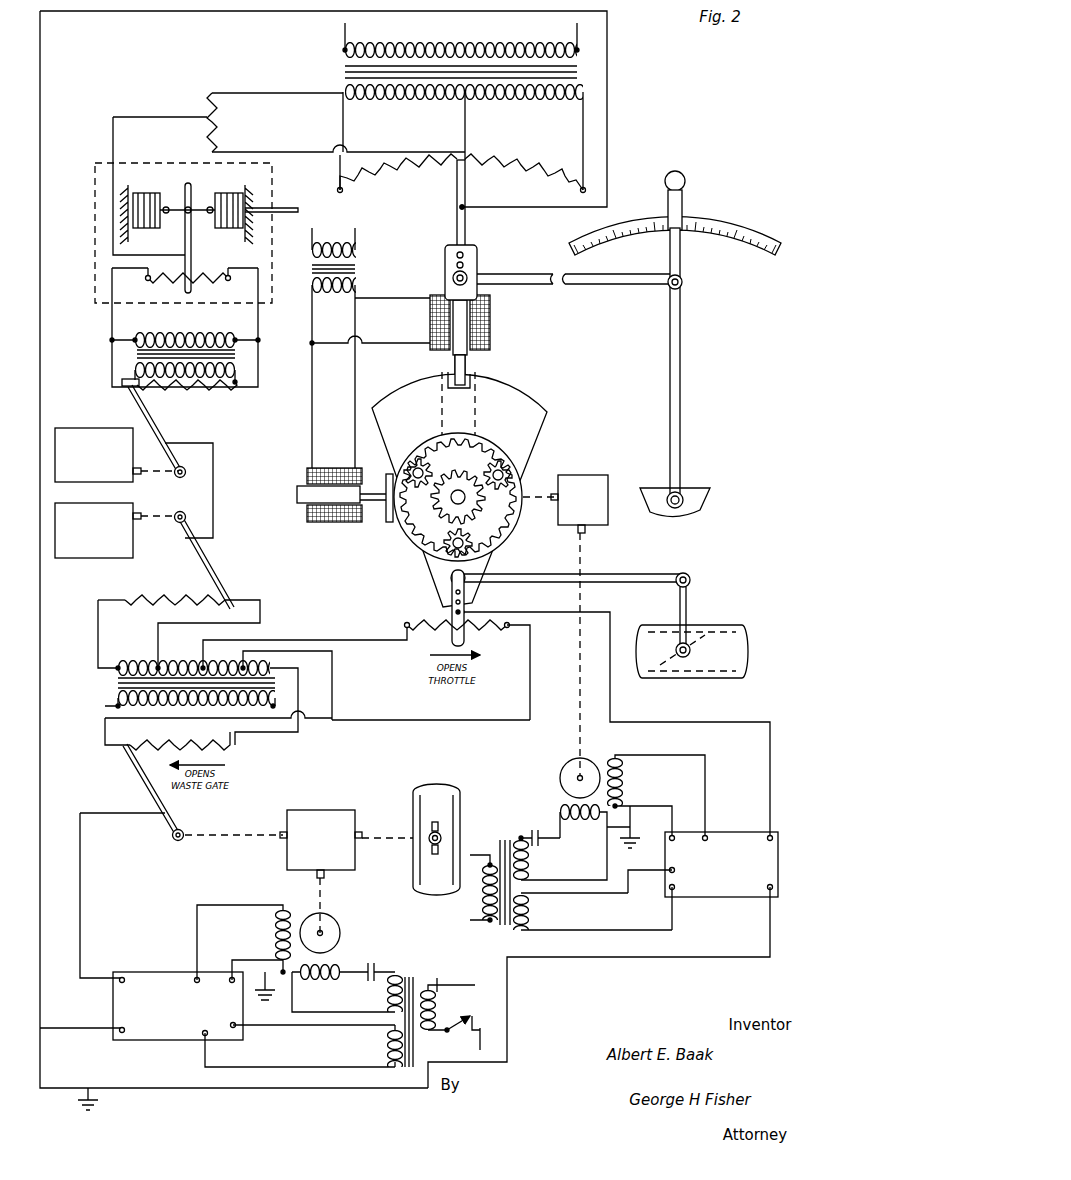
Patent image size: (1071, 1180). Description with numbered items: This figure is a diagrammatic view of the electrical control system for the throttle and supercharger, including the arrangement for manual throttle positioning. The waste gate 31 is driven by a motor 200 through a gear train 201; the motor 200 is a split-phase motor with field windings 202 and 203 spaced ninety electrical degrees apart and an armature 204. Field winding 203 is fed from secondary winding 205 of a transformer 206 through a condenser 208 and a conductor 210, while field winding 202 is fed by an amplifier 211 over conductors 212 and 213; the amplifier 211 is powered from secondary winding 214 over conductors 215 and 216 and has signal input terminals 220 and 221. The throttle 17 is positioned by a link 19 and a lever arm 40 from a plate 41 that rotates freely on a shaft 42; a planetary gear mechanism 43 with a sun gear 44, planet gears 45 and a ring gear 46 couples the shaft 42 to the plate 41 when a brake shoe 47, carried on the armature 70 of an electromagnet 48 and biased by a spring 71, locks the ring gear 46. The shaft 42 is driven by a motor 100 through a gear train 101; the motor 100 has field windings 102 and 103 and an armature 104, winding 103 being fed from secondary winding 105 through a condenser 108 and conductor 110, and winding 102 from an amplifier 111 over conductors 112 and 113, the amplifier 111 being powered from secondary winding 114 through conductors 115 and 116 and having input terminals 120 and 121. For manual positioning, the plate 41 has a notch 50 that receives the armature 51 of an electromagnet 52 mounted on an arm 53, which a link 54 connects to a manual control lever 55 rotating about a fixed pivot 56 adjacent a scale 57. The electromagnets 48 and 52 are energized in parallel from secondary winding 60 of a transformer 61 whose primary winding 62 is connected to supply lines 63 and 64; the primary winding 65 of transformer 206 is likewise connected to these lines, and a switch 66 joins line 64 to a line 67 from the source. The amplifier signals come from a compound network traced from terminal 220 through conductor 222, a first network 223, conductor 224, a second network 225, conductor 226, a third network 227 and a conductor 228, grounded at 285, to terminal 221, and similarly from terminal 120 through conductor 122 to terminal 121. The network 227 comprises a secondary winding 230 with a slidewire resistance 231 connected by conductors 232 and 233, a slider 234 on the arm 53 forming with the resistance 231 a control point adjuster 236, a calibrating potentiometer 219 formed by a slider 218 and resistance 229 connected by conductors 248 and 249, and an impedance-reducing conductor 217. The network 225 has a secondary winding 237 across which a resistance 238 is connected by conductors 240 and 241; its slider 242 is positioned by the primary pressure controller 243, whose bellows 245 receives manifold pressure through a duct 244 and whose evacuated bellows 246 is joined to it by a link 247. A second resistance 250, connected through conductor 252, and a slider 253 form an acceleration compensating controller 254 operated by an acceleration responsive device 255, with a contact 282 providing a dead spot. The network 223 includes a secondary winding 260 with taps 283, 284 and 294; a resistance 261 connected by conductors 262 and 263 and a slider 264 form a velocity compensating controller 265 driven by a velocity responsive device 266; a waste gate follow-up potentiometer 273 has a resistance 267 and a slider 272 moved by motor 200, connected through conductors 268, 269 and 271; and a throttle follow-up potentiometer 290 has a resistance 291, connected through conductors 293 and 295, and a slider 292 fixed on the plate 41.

The throttle valve 17 is at (720, 625).
The link 19 is at (625, 574).
The waste gate 31 is at (445, 822).
The lever arm 40 is at (690, 600).
The plate 41 is at (528, 393).
The shaft 42 is at (440, 503).
The planetary gear mechanism 43 is at (402, 558).
The sun gear 44 is at (480, 515).
The planet gears 45 is at (422, 460).
The ring gear 46 is at (505, 450).
The brake shoe 47 is at (386, 478).
The electromagnet 48 is at (318, 522).
The notch 50 is at (470, 375).
The armature 51 is at (455, 350).
The electromagnet 52 is at (492, 332).
The arm 53 is at (445, 270).
The link 54 is at (558, 285).
The manually operable control lever 55 is at (680, 322).
The fixed pivot 56 is at (680, 497).
The stationary scale 57 is at (715, 240).
The secondary winding 60 is at (318, 288).
The transformer 61 is at (357, 270).
The primary winding 62 is at (325, 245).
The supply line 63 is at (355, 25).
The supply line 64 is at (560, 25).
The primary winding 65 is at (437, 1005).
The switch 66 is at (462, 1035).
The line 67 is at (478, 1025).
The armature 70 is at (300, 486).
The spring 71 is at (350, 522).
The motor 100 is at (562, 768).
The gear train 101 is at (590, 475).
The field winding 102 is at (625, 772).
The field winding 103 is at (568, 822).
The armature 104 is at (595, 765).
The transformer secondary winding 105 is at (528, 864).
The condenser 108 is at (534, 828).
The conductor 110 is at (595, 880).
The amplifier 111 is at (721, 864).
The conductor 112 is at (705, 772).
The conductor 113 is at (655, 806).
The transformer secondary winding 114 is at (528, 915).
The conductor 115 is at (590, 893).
The conductor 116 is at (618, 930).
The signal input terminal 120 is at (768, 835).
The signal input terminal 121 is at (768, 892).
The conductor 122 is at (662, 722).
The motor 200 is at (325, 912).
The gear train 201 is at (312, 810).
The field winding 202 is at (275, 920).
The field winding 203 is at (335, 962).
The armature 204 is at (340, 927).
The secondary winding 205 is at (387, 998).
The transformer 206 is at (412, 975).
The condenser 208 is at (376, 962).
The conductor 210 is at (292, 995).
The amplifier 211 is at (178, 1006).
The conductor 212 is at (197, 930).
The conductor 213 is at (253, 960).
The secondary winding 214 is at (387, 1042).
The conductor 215 is at (262, 1027).
The conductor 216 is at (335, 1066).
The conductor 217 is at (465, 140).
The slider 218 is at (207, 117).
The calibrating potentiometer 219 is at (215, 90).
The signal input terminal 220 is at (124, 977).
The signal input terminal 221 is at (122, 1033).
The conductor 222 is at (83, 876).
The first electrical network 223 is at (115, 698).
The conductor 224 is at (213, 507).
The second electrical network 225 is at (110, 352).
The conductor 226 is at (124, 117).
The third electrical network 227 is at (375, 536).
The conductor 228 is at (318, 13).
The slide wire resistance 229 is at (222, 133).
The transformer secondary winding 230 is at (498, 100).
The slidewire resistance 231 is at (365, 182).
The conductor 232 is at (583, 140).
The conductor 233 is at (343, 130).
The slider 234 is at (468, 190).
The control point adjuster 236 is at (445, 183).
The secondary winding 237 is at (180, 332).
The slidewire resistance 238 is at (208, 283).
The conductor 240 is at (112, 312).
The conductor 241 is at (258, 320).
The slider 242 is at (191, 248).
The primary pressure controller 243 is at (95, 232).
The pressure take-off duct 244 is at (285, 208).
The bellows 245 is at (235, 192).
The bellows 246 is at (145, 192).
The link 247 is at (193, 195).
The conductor 248 is at (285, 93).
The conductor 249 is at (285, 152).
The slidewire resistance 250 is at (240, 388).
The conductor 252 is at (258, 358).
The slider 253 is at (160, 415).
The acceleration compensating controller 254 is at (235, 400).
The acceleration responsive control device 255 is at (90, 428).
The transformer secondary winding 260 is at (118, 670).
The slidewire resistance 261 is at (160, 597).
The conductor 262 is at (98, 620).
The conductor 263 is at (260, 608).
The slider 264 is at (230, 562).
The velocity responsive compensating controller 265 is at (238, 582).
The velocity responsive control device 266 is at (80, 558).
The slidewire resistance 267 is at (198, 744).
The conductor 268 is at (306, 718).
The conductor 269 is at (332, 690).
The conductor 271 is at (282, 735).
The slider 272 is at (150, 790).
The waste gate follow-up potentiometer 273 is at (125, 763).
The contact 282 is at (122, 384).
The tap 283 is at (155, 665).
The tap 284 is at (242, 665).
The ground 285 is at (105, 1102).
The throttle follow-up potentiometer 290 is at (445, 615).
The resistance 291 is at (112, 372).
The slider 292 is at (485, 635).
The conductor 293 is at (345, 640).
The tap 294 is at (200, 665).
The conductor 295 is at (450, 720).